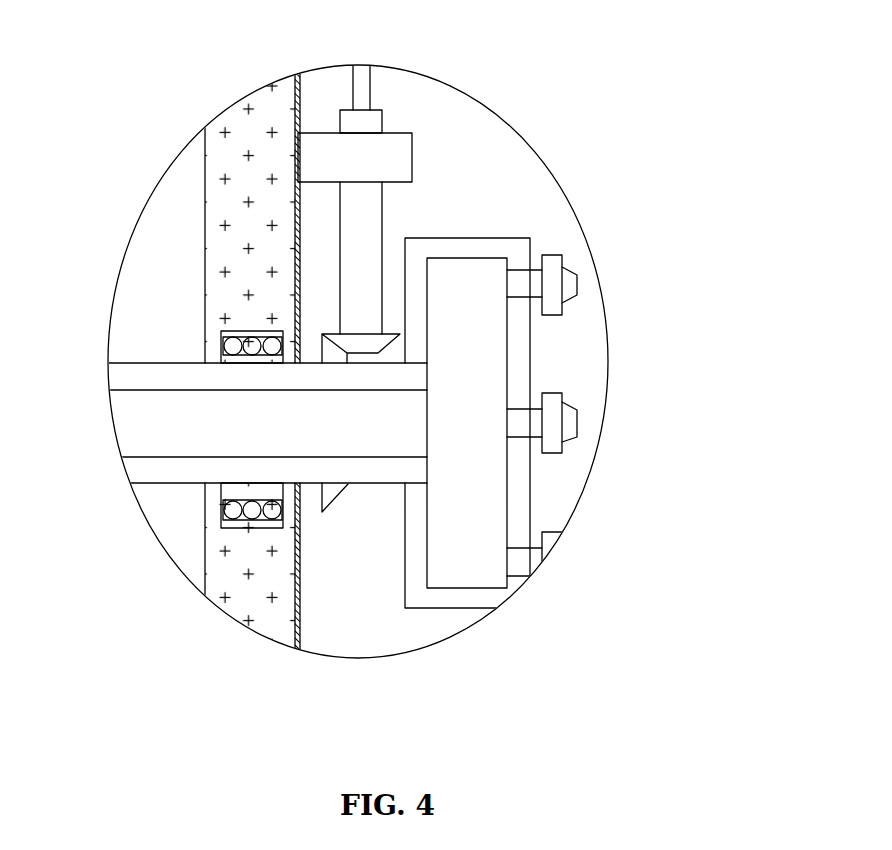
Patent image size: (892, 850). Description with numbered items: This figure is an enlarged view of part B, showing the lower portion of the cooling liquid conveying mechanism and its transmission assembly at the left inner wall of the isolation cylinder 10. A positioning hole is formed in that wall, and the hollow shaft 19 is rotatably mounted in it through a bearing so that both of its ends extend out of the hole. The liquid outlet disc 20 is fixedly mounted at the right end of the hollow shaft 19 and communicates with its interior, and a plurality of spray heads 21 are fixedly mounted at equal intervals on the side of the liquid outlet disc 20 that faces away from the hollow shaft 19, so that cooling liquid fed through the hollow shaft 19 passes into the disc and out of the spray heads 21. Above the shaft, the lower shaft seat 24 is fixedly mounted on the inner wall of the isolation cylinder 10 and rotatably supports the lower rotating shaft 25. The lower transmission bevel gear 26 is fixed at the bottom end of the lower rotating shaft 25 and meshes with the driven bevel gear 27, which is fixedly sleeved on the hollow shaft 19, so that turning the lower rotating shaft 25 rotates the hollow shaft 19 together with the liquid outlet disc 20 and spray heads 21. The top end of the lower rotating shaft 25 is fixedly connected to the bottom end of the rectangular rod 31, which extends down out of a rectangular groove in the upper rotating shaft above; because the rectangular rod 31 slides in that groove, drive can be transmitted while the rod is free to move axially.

The isolation cylinder 10 is at (250, 578).
The hollow shaft 19 is at (168, 484).
The liquid outlet disc 20 is at (530, 353).
The spray heads 21 is at (577, 285).
The lower shaft seat 24 is at (393, 150).
The lower rotating shaft 25 is at (380, 215).
The lower transmission bevel gear 26 is at (353, 342).
The driven bevel gear 27 is at (335, 500).
The rectangular rod 31 is at (370, 88).
The part B is at (118, 275).